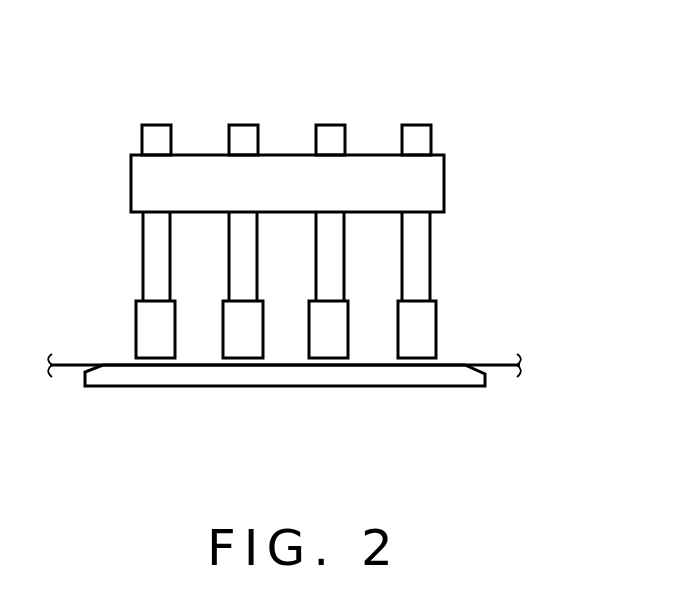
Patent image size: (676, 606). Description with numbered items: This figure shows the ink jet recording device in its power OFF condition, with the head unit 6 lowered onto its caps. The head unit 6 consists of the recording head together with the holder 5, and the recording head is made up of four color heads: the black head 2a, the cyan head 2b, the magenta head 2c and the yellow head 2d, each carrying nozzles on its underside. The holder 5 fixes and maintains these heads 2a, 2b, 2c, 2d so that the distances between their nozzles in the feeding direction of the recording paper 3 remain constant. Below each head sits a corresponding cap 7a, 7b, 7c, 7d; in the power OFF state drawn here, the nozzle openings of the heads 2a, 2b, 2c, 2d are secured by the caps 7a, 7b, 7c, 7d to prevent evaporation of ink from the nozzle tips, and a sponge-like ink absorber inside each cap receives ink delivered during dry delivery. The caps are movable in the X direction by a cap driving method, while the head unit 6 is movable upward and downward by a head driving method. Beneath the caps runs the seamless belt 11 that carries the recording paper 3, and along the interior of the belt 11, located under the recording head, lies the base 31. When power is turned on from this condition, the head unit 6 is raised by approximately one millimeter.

The black head 2a is at (417, 135).
The cyan head 2b is at (332, 135).
The magenta head 2c is at (246, 135).
The yellow head 2d is at (160, 135).
The holder 5 is at (445, 184).
The head unit 6 is at (472, 91).
The cap 7a is at (400, 332).
The cap 7b is at (313, 332).
The cap 7c is at (225, 327).
The cap 7d is at (135, 328).
The recording paper 3 is at (499, 365).
The seamless belt 11 is at (284, 365).
The base 31 is at (417, 388).